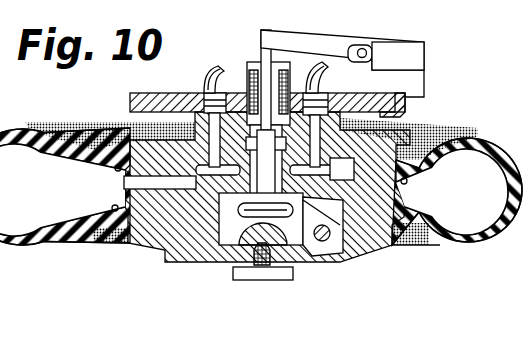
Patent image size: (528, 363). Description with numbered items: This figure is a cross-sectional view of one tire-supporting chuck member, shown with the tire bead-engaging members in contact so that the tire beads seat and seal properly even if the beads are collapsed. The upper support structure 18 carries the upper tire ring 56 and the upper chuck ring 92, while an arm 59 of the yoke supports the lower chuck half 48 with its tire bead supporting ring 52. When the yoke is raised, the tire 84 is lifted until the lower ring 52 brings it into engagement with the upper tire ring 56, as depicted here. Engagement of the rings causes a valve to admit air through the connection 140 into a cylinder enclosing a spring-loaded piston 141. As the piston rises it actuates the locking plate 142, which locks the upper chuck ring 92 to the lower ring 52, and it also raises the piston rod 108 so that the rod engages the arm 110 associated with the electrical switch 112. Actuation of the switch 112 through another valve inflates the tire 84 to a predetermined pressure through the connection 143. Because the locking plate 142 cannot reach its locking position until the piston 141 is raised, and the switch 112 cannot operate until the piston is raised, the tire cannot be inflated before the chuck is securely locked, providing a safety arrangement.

The upper support structure 18 is at (128, 103).
The lower chuck half 48 is at (331, 238).
The tire bead supporting ring 52 is at (407, 246).
The upper tire ring 56 is at (405, 158).
The arm 59 is at (276, 273).
The tire 84 is at (482, 143).
The upper chuck ring 92 is at (409, 114).
The piston rod 108 is at (261, 62).
The arm 110 is at (293, 43).
The electrical switch 112 is at (390, 50).
The connection 140 is at (204, 84).
The spring-loaded piston 141 is at (226, 95).
The locking plate 142 is at (316, 248).
The connection 143 is at (321, 74).